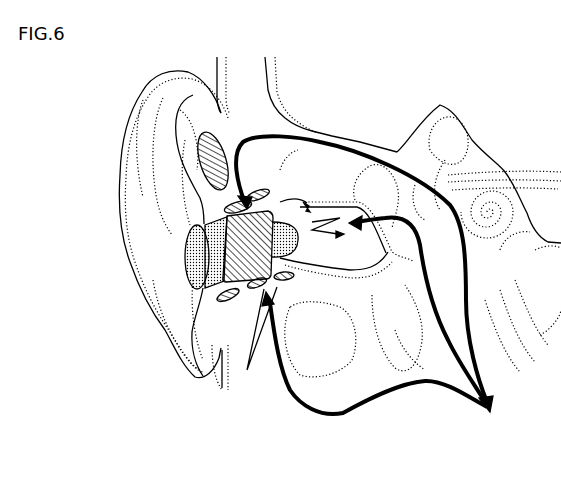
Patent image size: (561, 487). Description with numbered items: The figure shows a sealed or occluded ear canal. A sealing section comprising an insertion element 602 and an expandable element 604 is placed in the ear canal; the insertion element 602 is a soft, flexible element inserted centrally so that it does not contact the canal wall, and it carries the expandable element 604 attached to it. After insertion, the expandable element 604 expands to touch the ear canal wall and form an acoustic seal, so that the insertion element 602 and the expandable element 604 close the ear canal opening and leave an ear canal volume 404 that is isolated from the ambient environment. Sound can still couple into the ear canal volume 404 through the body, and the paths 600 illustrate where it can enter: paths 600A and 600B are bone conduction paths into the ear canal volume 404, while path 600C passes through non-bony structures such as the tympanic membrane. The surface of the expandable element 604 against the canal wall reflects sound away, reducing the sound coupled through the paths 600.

The paths 600 is at (503, 418).
The bone conduction path 600A is at (330, 137).
The bone conduction path 600B is at (300, 408).
The path through non-bony structures 600C is at (433, 318).
The ear canal volume 404 is at (366, 261).
The insertion element 602 is at (200, 263).
The expandable element 604 is at (243, 248).